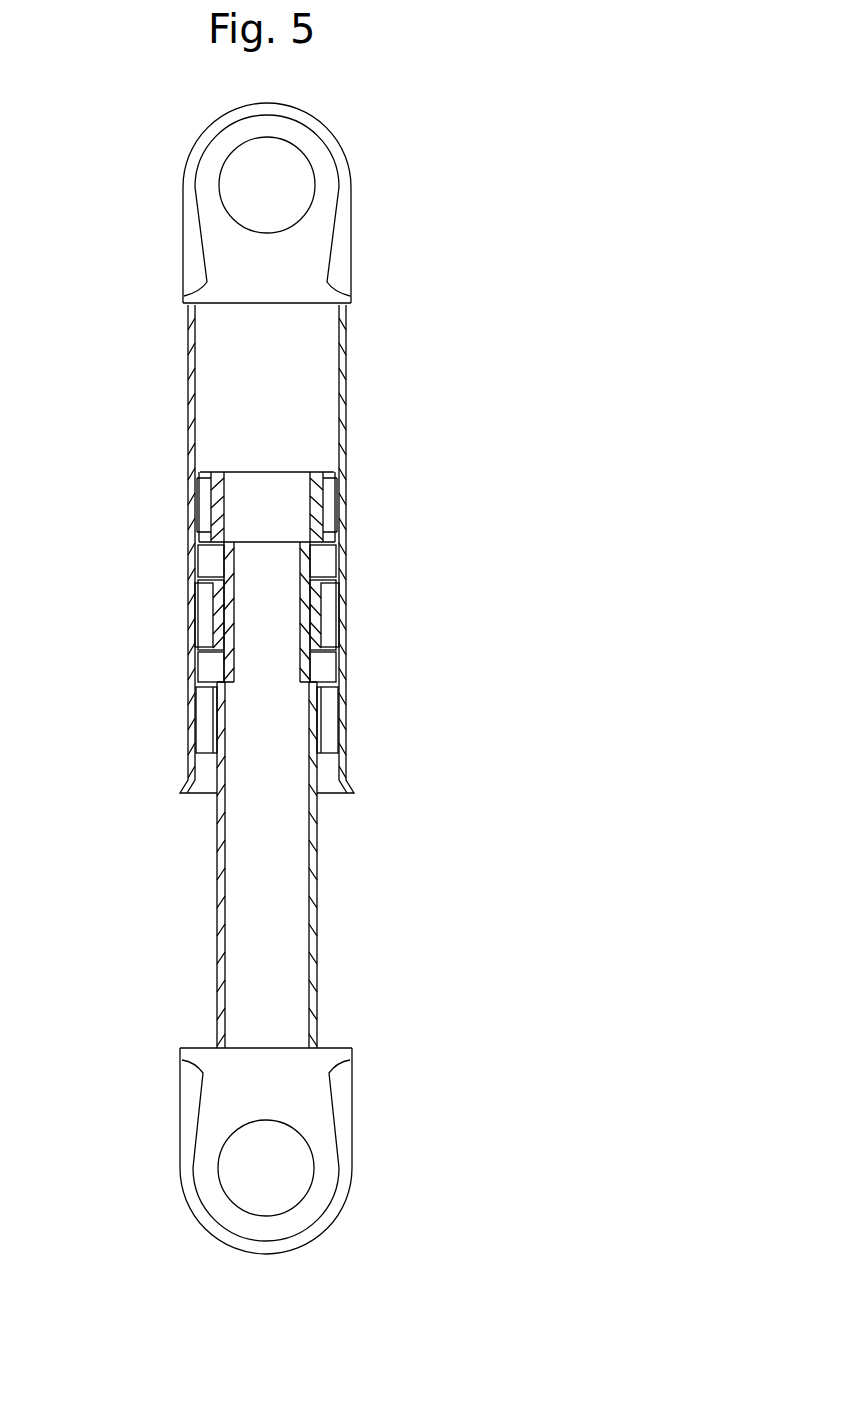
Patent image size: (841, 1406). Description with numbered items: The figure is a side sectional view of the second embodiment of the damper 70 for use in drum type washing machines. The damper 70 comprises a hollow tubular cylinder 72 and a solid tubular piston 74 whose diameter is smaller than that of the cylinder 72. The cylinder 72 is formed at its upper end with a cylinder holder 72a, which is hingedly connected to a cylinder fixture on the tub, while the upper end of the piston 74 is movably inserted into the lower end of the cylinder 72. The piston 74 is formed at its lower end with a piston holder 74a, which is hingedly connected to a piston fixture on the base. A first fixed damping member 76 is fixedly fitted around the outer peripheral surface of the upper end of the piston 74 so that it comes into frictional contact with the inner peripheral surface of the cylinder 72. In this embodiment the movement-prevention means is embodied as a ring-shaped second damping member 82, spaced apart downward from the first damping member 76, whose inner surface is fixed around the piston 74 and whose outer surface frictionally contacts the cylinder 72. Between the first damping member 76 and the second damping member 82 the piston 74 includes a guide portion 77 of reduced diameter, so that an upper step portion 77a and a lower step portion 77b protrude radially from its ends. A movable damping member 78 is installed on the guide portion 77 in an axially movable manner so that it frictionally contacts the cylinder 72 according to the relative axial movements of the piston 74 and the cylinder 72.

The damper 70 is at (393, 196).
The cylinder 72 is at (181, 396).
The cylinder holder 72a is at (318, 254).
The piston 74 is at (206, 900).
The piston holder 74a is at (313, 1107).
The first fixed damping member 76 is at (200, 498).
The guide portion 77 is at (200, 670).
The upper step portion 77a is at (309, 556).
The lower step portion 77b is at (309, 672).
The movable damping member 78 is at (200, 610).
The second damping member 82 is at (200, 721).